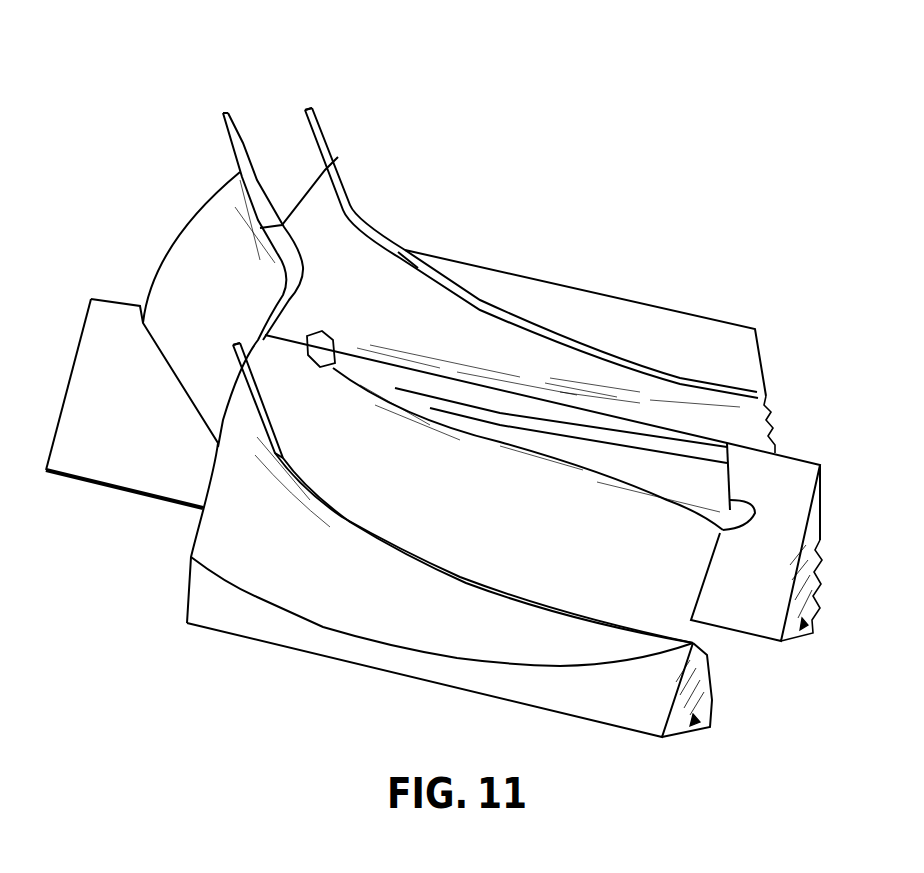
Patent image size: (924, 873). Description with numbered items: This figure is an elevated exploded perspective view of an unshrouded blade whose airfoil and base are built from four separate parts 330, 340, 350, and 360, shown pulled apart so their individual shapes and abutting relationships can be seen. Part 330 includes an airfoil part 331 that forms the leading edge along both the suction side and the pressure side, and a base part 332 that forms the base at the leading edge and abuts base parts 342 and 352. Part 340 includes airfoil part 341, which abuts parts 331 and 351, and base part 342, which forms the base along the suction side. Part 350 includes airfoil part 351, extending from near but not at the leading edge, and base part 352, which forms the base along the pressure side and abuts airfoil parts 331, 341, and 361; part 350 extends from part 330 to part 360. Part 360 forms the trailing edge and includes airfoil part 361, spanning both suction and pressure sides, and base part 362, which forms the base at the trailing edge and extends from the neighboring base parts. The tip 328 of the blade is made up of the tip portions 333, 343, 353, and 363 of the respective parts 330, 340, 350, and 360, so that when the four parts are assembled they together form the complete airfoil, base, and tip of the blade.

The tip 328 is at (307, 123).
The part 330 is at (145, 421).
The part 331 is at (208, 248).
The part 332 is at (153, 467).
The portion 333 is at (249, 173).
The part 340 is at (608, 701).
The part 341 is at (321, 564).
The part 342 is at (700, 703).
The portion 343 is at (280, 437).
The part 350 is at (646, 337).
The airfoil part 351 is at (355, 187).
The part 352 is at (773, 425).
The portion 353 is at (350, 207).
The part 360 is at (770, 602).
The part 361 is at (560, 480).
The part 362 is at (813, 587).
The portion 363 is at (322, 347).